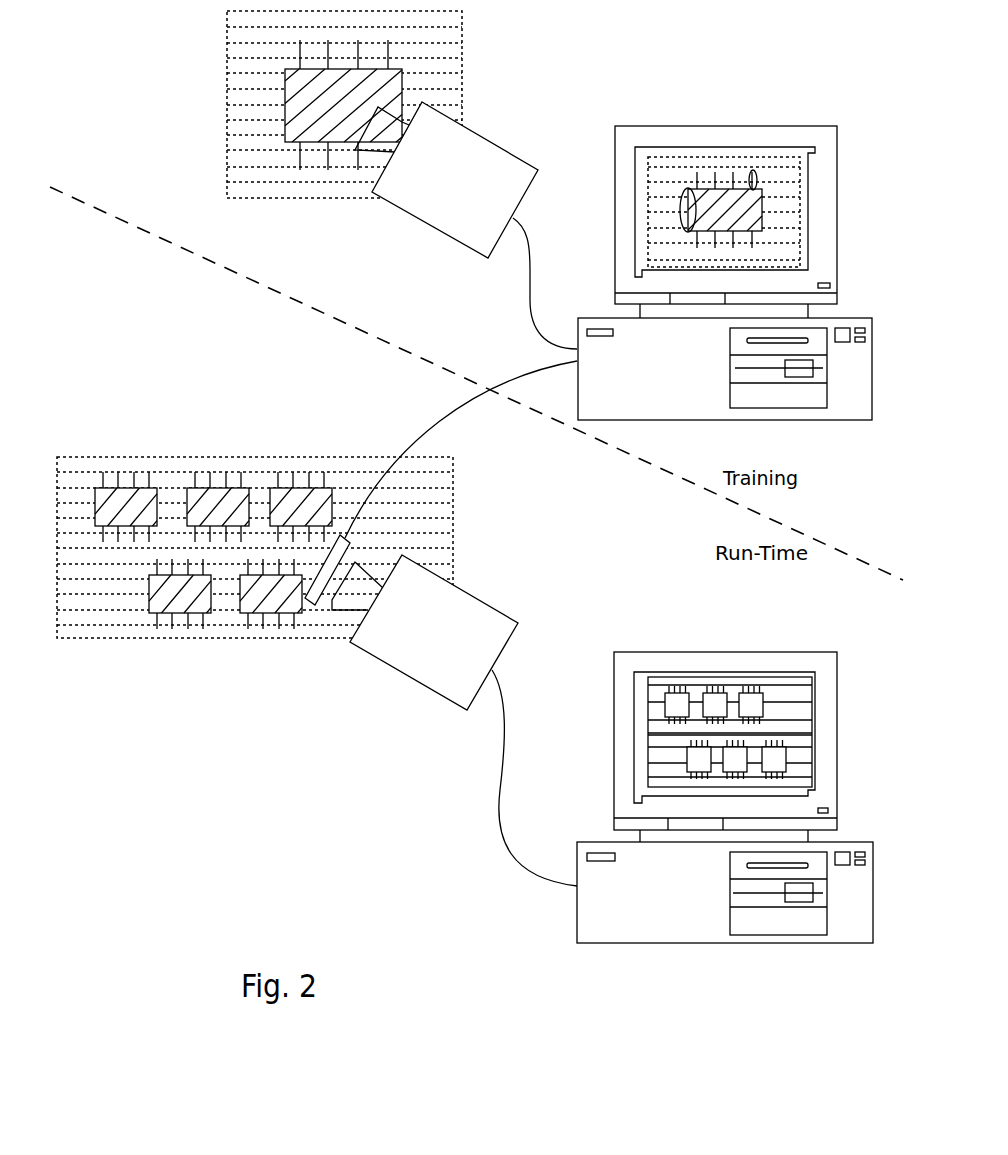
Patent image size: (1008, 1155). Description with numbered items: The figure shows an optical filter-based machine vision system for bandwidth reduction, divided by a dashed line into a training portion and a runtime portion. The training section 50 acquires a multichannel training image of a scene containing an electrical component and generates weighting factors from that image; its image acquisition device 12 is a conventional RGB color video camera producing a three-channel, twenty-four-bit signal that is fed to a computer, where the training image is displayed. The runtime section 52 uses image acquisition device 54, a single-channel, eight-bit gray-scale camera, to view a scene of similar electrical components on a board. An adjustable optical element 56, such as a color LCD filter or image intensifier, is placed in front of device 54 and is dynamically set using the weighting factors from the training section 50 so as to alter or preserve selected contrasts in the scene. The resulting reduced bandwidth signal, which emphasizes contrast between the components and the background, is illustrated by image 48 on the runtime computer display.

The image acquisition device 12 is at (490, 137).
The image 48 is at (798, 718).
The training section 50 is at (833, 460).
The runtime section 52 is at (739, 759).
The image acquisition device 54 is at (410, 677).
The adjustable optical element 56 is at (348, 550).